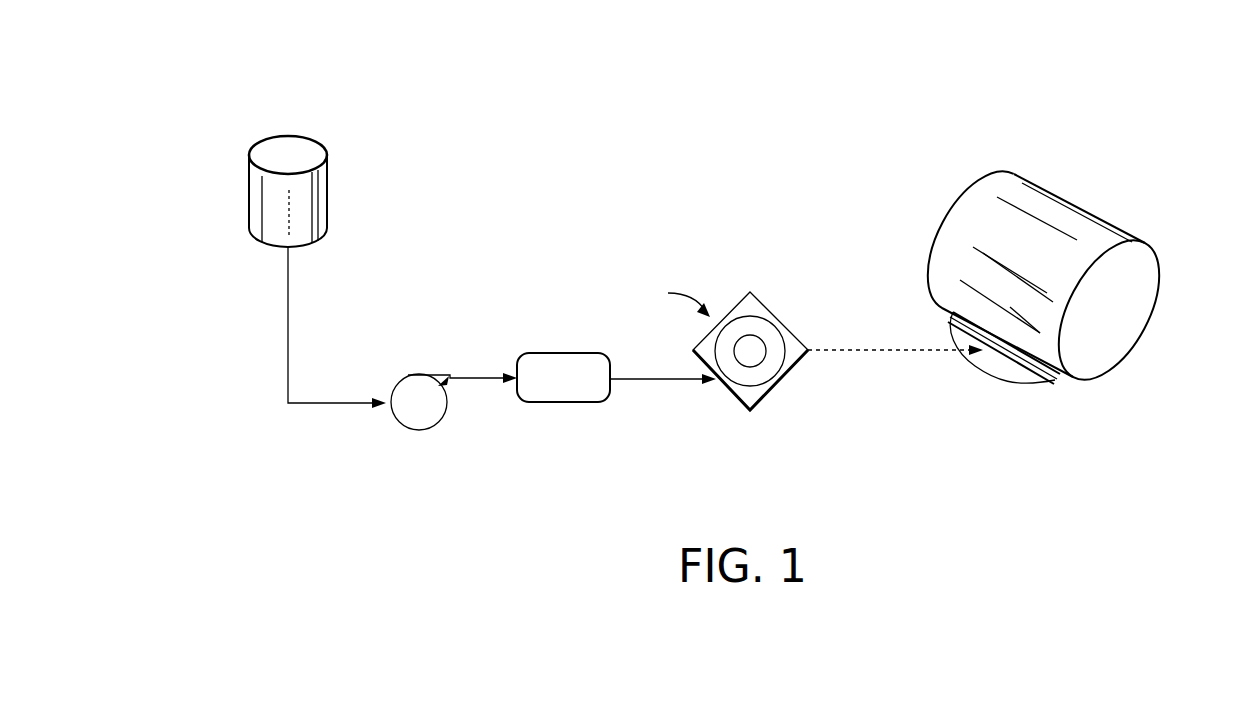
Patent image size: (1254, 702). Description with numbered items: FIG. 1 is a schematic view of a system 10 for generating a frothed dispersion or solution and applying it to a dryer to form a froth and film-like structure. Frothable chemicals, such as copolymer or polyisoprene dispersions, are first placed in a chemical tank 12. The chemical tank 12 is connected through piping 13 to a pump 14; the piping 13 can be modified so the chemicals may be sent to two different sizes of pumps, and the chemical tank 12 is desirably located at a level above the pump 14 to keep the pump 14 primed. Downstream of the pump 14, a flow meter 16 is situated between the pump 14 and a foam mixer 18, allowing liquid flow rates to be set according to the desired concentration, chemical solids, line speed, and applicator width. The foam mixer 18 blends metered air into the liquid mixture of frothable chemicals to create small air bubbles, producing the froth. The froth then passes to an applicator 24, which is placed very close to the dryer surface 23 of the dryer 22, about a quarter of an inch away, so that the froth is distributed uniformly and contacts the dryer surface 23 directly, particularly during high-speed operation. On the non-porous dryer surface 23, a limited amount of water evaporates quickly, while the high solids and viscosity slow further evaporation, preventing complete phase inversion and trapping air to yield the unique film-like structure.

The system 10 is at (872, 83).
The chemical tank 12 is at (328, 190).
The piping 13 is at (288, 312).
The pump 14 is at (421, 431).
The flow meter 16 is at (569, 402).
The foam mixer 18 is at (783, 382).
The dryer 22 is at (1126, 316).
The dryer surface 23 is at (995, 227).
The applicator 24 is at (1002, 367).